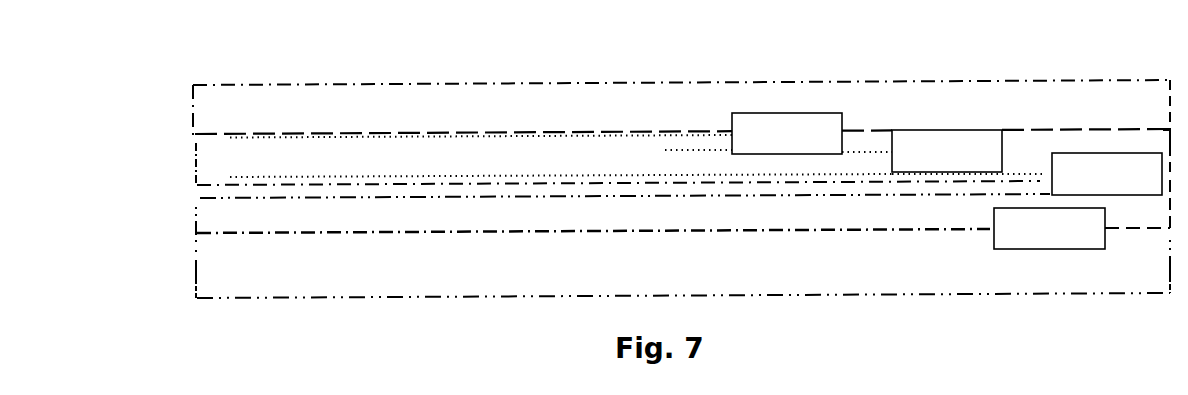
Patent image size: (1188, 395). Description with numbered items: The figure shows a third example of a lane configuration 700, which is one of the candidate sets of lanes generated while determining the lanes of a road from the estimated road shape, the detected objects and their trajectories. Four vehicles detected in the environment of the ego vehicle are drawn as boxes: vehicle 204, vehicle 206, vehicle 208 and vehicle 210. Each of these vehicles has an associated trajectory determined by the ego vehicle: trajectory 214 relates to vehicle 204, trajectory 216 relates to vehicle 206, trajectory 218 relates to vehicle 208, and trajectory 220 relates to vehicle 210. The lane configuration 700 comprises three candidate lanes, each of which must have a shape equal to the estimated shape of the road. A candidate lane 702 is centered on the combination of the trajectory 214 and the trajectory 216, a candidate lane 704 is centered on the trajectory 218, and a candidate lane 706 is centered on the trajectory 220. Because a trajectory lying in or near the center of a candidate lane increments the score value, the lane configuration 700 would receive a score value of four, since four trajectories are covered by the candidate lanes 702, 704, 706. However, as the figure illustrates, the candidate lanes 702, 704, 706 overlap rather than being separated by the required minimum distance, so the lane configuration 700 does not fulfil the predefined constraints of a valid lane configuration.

The lane configuration 700 is at (227, 47).
The candidate lane 702 is at (192, 105).
The candidate lane 704 is at (196, 278).
The candidate lane 706 is at (196, 193).
The vehicle 204 is at (807, 113).
The vehicle 206 is at (932, 130).
The vehicle 208 is at (1033, 205).
The vehicle 210 is at (1125, 153).
The trajectory 214 is at (348, 134).
The trajectory 216 is at (697, 148).
The trajectory 218 is at (535, 233).
The trajectory 220 is at (618, 178).